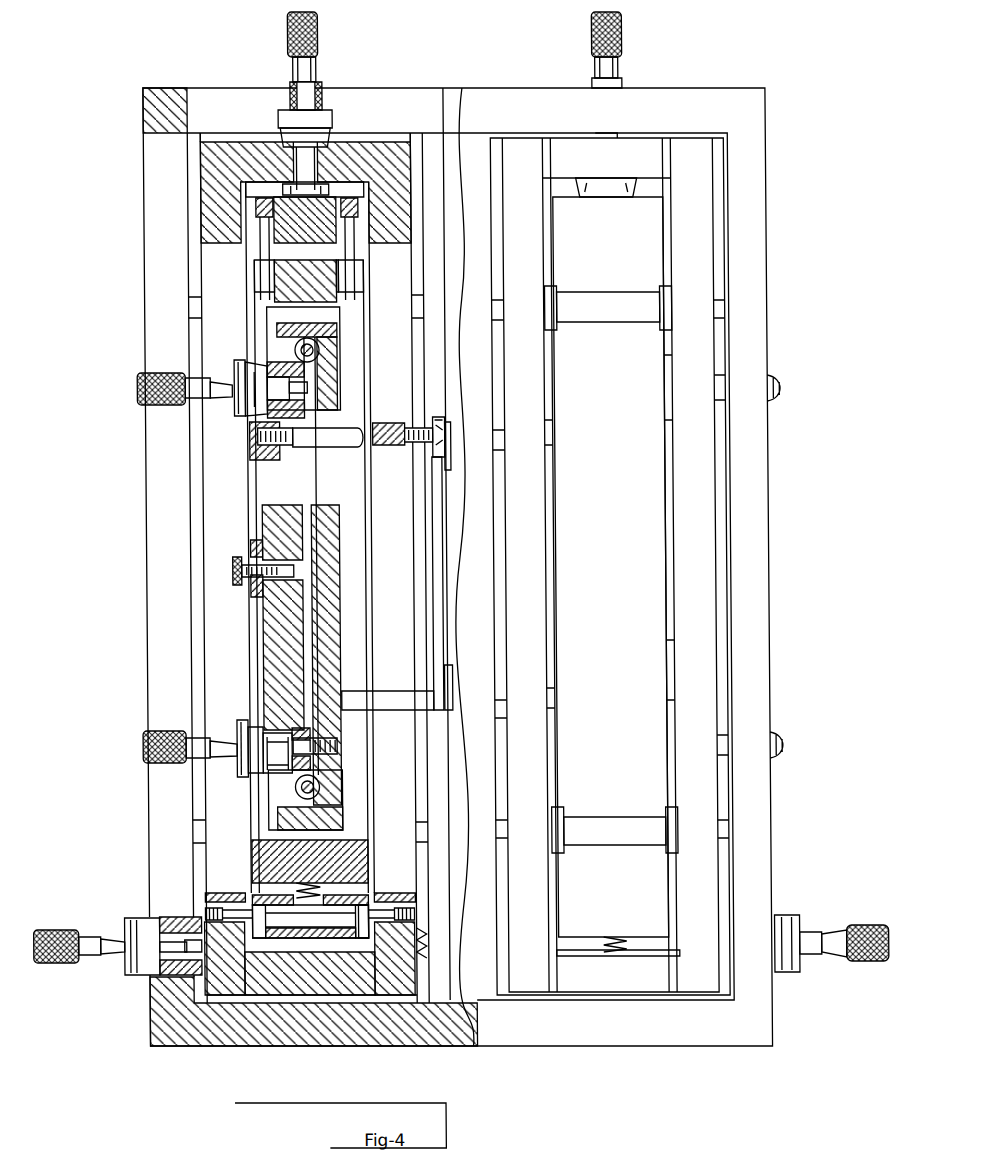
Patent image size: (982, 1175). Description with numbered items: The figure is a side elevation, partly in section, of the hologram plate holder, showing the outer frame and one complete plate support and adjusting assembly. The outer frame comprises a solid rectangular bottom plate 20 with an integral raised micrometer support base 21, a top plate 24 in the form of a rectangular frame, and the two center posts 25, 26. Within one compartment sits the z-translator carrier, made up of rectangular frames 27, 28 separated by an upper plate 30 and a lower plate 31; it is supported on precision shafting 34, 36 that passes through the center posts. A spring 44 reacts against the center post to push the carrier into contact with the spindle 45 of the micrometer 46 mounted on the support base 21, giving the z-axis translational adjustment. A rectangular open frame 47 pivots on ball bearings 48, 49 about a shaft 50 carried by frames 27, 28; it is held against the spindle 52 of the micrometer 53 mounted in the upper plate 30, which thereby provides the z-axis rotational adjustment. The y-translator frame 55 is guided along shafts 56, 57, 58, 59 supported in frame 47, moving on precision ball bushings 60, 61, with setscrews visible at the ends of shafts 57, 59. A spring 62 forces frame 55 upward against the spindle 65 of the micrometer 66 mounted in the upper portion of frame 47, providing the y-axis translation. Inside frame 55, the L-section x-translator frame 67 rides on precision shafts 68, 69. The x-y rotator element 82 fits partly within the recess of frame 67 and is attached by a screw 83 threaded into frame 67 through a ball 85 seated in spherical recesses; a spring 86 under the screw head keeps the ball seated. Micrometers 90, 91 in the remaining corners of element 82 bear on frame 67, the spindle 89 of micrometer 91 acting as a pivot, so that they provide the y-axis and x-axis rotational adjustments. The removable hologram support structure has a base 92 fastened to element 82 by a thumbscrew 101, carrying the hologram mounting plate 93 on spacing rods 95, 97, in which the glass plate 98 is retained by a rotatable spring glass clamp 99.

The bottom plate 20 is at (192, 1046).
The micrometer support base 21 is at (160, 996).
The top plate 24 is at (385, 88).
The center post 25 is at (474, 155).
The center post 26 is at (429, 148).
The rectangular frame 27 is at (225, 995).
The rectangular frame 28 is at (424, 977).
The upper plate 30 is at (262, 146).
The lower plate 31 is at (318, 995).
The shafting 34 is at (197, 306).
The shafting 36 is at (198, 832).
The spring 44 is at (418, 950).
The spindle 45 is at (207, 930).
The micrometer 46 is at (70, 930).
The rectangular open frame 47 is at (258, 240).
The ball bearing 48 is at (262, 910).
The ball bearing 49 is at (366, 905).
The shaft 50 is at (365, 915).
The spindle 52 is at (284, 190).
The micrometer 53 is at (318, 28).
The y-translator frame 55 is at (355, 276).
The shaft 56 is at (262, 898).
The shaft 57 is at (258, 264).
The shaft 58 is at (363, 884).
The shaft 59 is at (358, 252).
The ball bushing 60 is at (255, 278).
The ball bushing 61 is at (357, 280).
The spring 62 is at (292, 884).
The spindle 65 is at (312, 243).
The micrometer 66 is at (291, 97).
The rectangular frame 67 is at (338, 546).
The precision shaft 68 is at (316, 343).
The precision shaft 69 is at (314, 787).
The x-y rotator element 82 is at (262, 617).
The screw 83 is at (255, 770).
The ball 85 is at (318, 745).
The spring 86 is at (285, 733).
The spindle 89 is at (296, 388).
The micrometer 90 is at (138, 745).
The micrometer 91 is at (135, 391).
The base 92 is at (250, 446).
The hologram mounting plate 93 is at (434, 417).
The spacing rod 95 is at (386, 446).
The spacing rod 97 is at (388, 691).
The glass plate 98 is at (429, 486).
The spring glass clamp 99 is at (450, 450).
The thumbscrew 101 is at (231, 566).